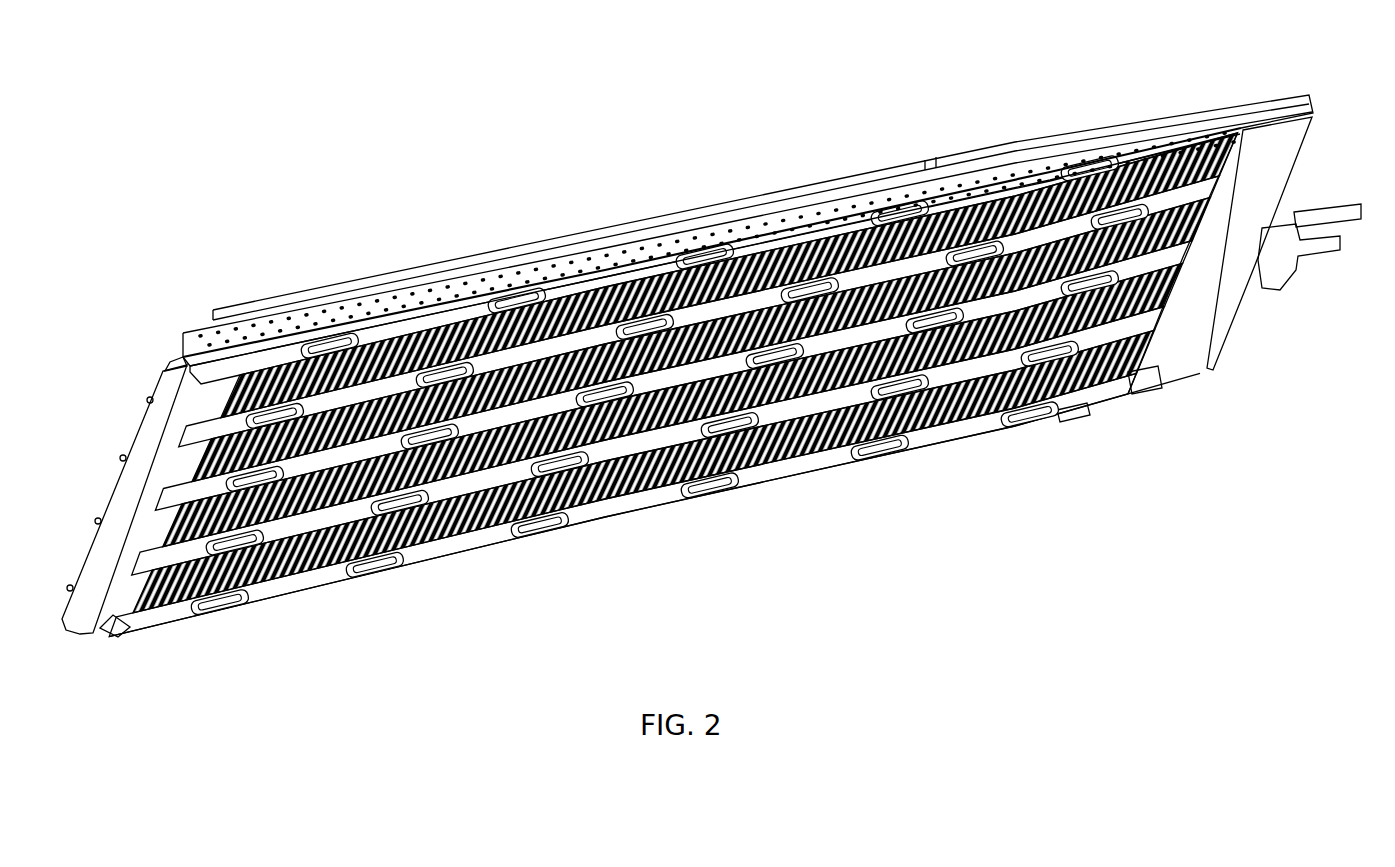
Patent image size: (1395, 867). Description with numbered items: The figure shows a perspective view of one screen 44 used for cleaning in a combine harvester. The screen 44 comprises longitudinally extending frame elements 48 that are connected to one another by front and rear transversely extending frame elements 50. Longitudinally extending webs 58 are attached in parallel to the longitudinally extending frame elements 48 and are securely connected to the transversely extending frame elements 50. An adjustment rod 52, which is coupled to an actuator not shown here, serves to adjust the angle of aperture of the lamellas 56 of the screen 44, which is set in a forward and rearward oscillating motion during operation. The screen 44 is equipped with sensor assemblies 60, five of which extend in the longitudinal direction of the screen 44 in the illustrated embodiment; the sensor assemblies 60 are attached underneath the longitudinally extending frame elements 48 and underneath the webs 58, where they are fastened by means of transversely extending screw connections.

The screen 44 is at (890, 545).
The longitudinally extending frame elements 48 is at (1087, 150).
The transversely extending frame elements 50 is at (157, 440).
The adjustment rod 52 is at (1183, 258).
The lamellas 56 is at (1196, 160).
The longitudinally extending webs 58 is at (1008, 190).
The sensor assemblies 60 is at (813, 290).